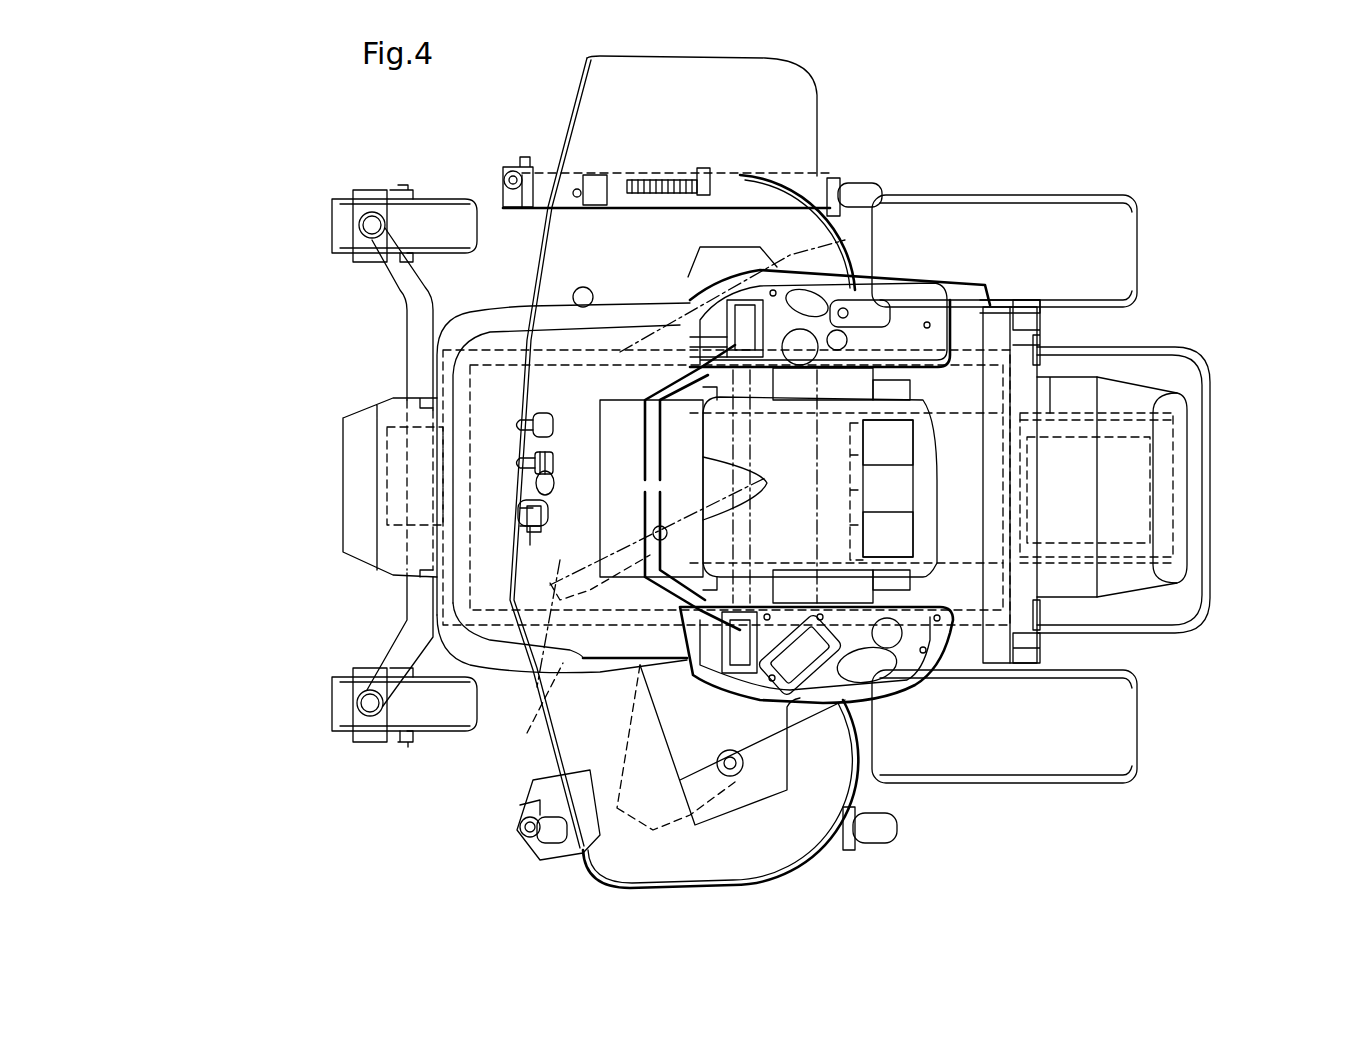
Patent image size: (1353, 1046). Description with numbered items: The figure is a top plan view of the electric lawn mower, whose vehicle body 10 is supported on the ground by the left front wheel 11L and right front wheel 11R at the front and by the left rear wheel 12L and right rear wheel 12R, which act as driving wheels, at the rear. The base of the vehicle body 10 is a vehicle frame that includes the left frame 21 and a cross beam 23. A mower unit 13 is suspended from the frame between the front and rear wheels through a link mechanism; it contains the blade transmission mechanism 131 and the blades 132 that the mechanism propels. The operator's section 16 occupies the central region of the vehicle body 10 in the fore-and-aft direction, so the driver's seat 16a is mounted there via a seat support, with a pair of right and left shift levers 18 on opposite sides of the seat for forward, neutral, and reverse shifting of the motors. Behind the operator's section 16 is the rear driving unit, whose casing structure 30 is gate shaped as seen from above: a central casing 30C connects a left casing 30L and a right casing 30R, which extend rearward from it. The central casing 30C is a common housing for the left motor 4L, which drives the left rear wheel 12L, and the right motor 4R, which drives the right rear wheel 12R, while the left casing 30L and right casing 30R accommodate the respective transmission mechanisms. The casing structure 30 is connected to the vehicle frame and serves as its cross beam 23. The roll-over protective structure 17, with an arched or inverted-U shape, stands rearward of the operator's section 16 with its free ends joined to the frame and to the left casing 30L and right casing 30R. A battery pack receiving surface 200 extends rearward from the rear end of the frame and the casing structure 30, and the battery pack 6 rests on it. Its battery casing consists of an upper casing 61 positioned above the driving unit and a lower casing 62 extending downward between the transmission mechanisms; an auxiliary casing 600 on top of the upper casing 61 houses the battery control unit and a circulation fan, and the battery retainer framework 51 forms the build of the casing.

The vehicle body 10 is at (328, 176).
The right front wheel 11R is at (332, 222).
The left front wheel 11L is at (332, 709).
The right rear wheel 12R is at (1120, 223).
The left rear wheel 12L is at (1118, 729).
The mower unit 13 is at (550, 762).
The operator's section 16 is at (511, 256).
The driver's seat 16a is at (655, 415).
The roll-over protective structure (ROPS) 17 is at (1000, 317).
The shift levers 18 is at (648, 500).
The left frame 21 is at (534, 453).
The cross beam 23 is at (415, 350).
The casing structure 30 is at (840, 428).
The central casing 30C is at (848, 490).
The right casing 30R is at (983, 300).
The left casing 30L is at (962, 612).
The right motor 4R is at (848, 462).
The left motor 4L is at (848, 532).
The battery retainer framework 51 is at (1140, 405).
The upper casing 61 is at (960, 440).
The lower casing 62 is at (995, 455).
The blade transmission mechanism 131 is at (745, 810).
The blades 132 is at (662, 342).
The battery pack receiving surface 200 is at (1210, 428).
The auxiliary casing 600 is at (1140, 488).
The battery pack 6 is at (1135, 570).